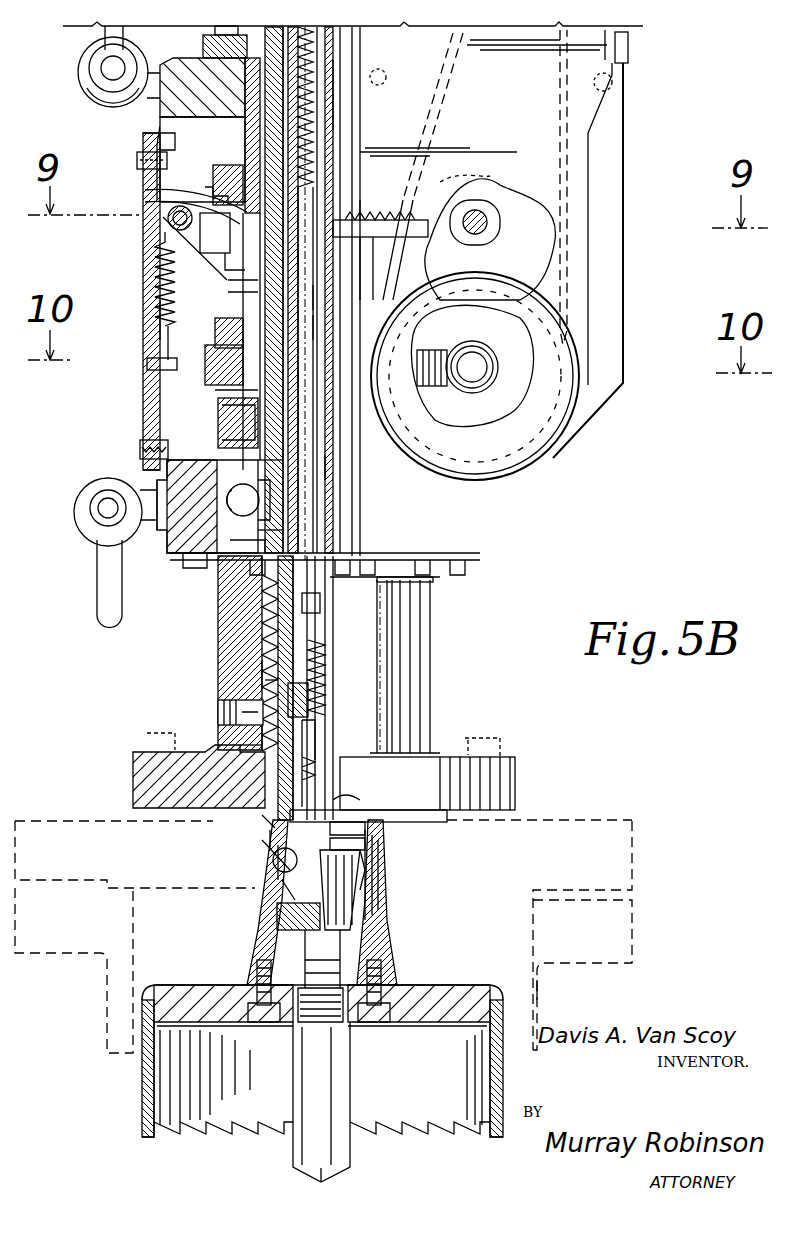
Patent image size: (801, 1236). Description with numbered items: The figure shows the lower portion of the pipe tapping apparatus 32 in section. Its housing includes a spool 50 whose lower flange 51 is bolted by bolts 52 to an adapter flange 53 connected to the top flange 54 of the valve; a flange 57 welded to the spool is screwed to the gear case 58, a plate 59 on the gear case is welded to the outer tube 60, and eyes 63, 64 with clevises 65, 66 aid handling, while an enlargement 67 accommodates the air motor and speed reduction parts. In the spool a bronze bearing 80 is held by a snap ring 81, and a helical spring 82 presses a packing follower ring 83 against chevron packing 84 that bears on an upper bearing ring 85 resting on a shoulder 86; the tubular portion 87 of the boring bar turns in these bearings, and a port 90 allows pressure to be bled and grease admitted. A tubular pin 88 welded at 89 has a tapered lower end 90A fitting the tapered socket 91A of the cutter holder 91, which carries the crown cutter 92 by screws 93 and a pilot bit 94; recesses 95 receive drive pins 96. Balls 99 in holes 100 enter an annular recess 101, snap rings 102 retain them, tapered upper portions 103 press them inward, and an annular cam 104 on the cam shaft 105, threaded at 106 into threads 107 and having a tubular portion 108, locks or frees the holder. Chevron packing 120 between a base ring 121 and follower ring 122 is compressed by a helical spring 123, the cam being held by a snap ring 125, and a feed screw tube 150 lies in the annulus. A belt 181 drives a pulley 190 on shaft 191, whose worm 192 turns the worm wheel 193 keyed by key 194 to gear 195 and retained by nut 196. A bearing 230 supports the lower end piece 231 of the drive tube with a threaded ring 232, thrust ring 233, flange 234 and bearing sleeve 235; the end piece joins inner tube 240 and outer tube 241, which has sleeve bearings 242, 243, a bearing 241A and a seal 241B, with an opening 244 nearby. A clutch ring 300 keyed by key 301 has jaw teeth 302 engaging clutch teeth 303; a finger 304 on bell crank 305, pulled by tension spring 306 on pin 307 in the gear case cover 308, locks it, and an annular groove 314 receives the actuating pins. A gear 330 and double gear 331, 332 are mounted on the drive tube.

The pipe tapping apparatus 32 is at (537, 992).
The spool 50 is at (435, 626).
The lower flange 51 is at (515, 771).
The bolts 52 is at (490, 817).
The adapter flange 53 is at (635, 869).
The top flange 54 is at (637, 929).
The flange 57 is at (168, 544).
The gear case 58 is at (165, 467).
The plate 59 is at (203, 39).
The outer tube 60 is at (333, 39).
The eye 63 is at (88, 496).
The eye 64 is at (80, 90).
The clevis 65 is at (97, 574).
The clevis 66 is at (106, 40).
The enlargement 67 is at (610, 242).
The bronze bearing 80 is at (262, 727).
The snap ring 81 is at (133, 764).
The helical spring 82 is at (262, 684).
The packing follower ring 83 is at (262, 667).
The chevron packing 84 is at (230, 629).
The upper bearing ring 85 is at (262, 611).
The shoulder 86 is at (268, 599).
The tubular portion 87 is at (280, 587).
The tubular pin 88 is at (255, 744).
The weld 89 is at (320, 721).
The port 90 is at (218, 709).
The tapered lower end 90A is at (390, 904).
The cutter holder 91 is at (385, 952).
The tapered socket 91A is at (390, 917).
The crown cutter 92 is at (140, 1094).
The screws 93 is at (258, 988).
The pilot bit 94 is at (292, 1157).
The recesses 95 is at (395, 827).
The drive pins 96 is at (395, 841).
The balls 99 is at (390, 854).
The holes 100 is at (278, 904).
The annular recess 101 is at (272, 865).
The snap rings 102 is at (275, 861).
The tapered upper portions 103 is at (262, 854).
The annular cam 104 is at (270, 837).
The cam shaft 105 is at (320, 736).
The external threads 106 is at (322, 659).
The threads 107 is at (325, 704).
The tubular portion 108 is at (318, 611).
The chevron packing 120 is at (320, 776).
The base ring 121 is at (320, 761).
The follower ring 122 is at (335, 791).
The helical spring 123 is at (263, 825).
The snap ring 125 is at (285, 914).
The feed screw tube 150 is at (260, 499).
The belt 181 is at (565, 173).
The pulley 190 is at (540, 296).
The shaft 191 is at (475, 340).
The worm 192 is at (515, 385).
The worm wheel 193 is at (440, 400).
The key 194 is at (208, 351).
The gear 195 is at (218, 417).
The nut 196 is at (215, 327).
The bearing 230 is at (270, 505).
The lower end piece 231 is at (330, 466).
The threaded ring 232 is at (240, 547).
The thrust ring 233 is at (243, 441).
The flange 234 is at (267, 461).
The bearing sleeve 235 is at (265, 531).
The inner tube 240 is at (300, 409).
The outer tube 241 is at (300, 379).
The bearing 241A is at (245, 123).
The seal 241B is at (333, 92).
The sleeve bearing 242 is at (218, 399).
The sleeve bearing 243 is at (315, 325).
The hole 244 is at (386, 75).
The clutch ring 300 is at (222, 204).
The key 301 is at (300, 261).
The jaw teeth 302 is at (228, 299).
The clutch teeth 303 is at (315, 295).
The finger 304 is at (222, 284).
The bell crank 305 is at (198, 254).
The tension spring 306 is at (140, 317).
The pin 307 is at (160, 354).
The gear case cover 308 is at (152, 284).
The annular groove 314 is at (420, 257).
The gear 330 is at (160, 189).
The gear 331 is at (225, 163).
The gear 332 is at (215, 190).